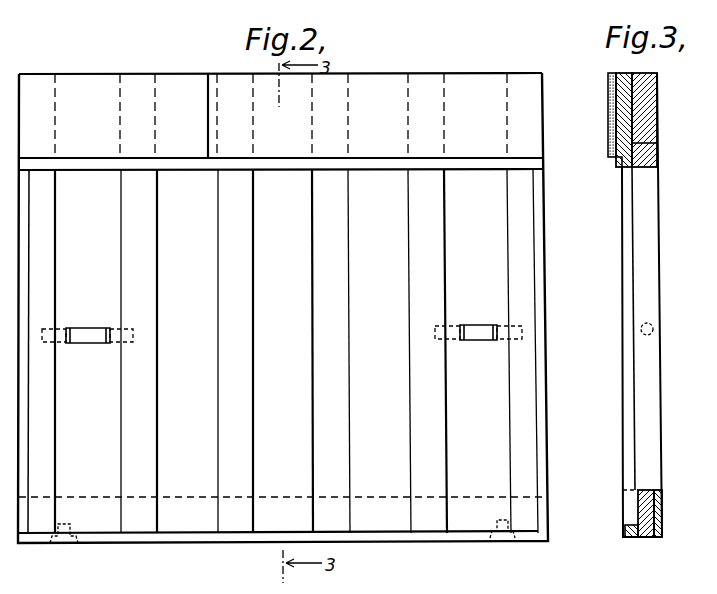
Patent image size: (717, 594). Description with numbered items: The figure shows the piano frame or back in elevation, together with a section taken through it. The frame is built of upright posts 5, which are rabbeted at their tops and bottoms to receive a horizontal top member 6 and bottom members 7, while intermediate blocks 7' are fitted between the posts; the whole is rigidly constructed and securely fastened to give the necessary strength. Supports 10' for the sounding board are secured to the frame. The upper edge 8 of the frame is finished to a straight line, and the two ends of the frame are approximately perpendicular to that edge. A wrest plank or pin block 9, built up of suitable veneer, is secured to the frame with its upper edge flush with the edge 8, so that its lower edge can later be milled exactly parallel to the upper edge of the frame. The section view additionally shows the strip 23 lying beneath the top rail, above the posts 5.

In FIG. 2, the upright posts 5 is at (515, 381).
In FIG. 3, the upright posts 5 is at (652, 357).
In FIG. 3, the horizontal top member 6 is at (634, 143).
In FIG. 2, the bottom members 7 is at (283, 494).
In FIG. 3, the bottom members 7 is at (672, 513).
In FIG. 3, the intermediate blocks 7' is at (656, 305).
In FIG. 2, the upper edge 8 is at (425, 73).
In FIG. 3, the wrest plank 9 is at (608, 135).
In FIG. 2, the supports 10' is at (303, 323).
In FIG. 3, the supports 10' is at (620, 546).
In FIG. 2, the intermediate strip 23 is at (285, 159).
In FIG. 3, the intermediate strip 23 is at (613, 160).